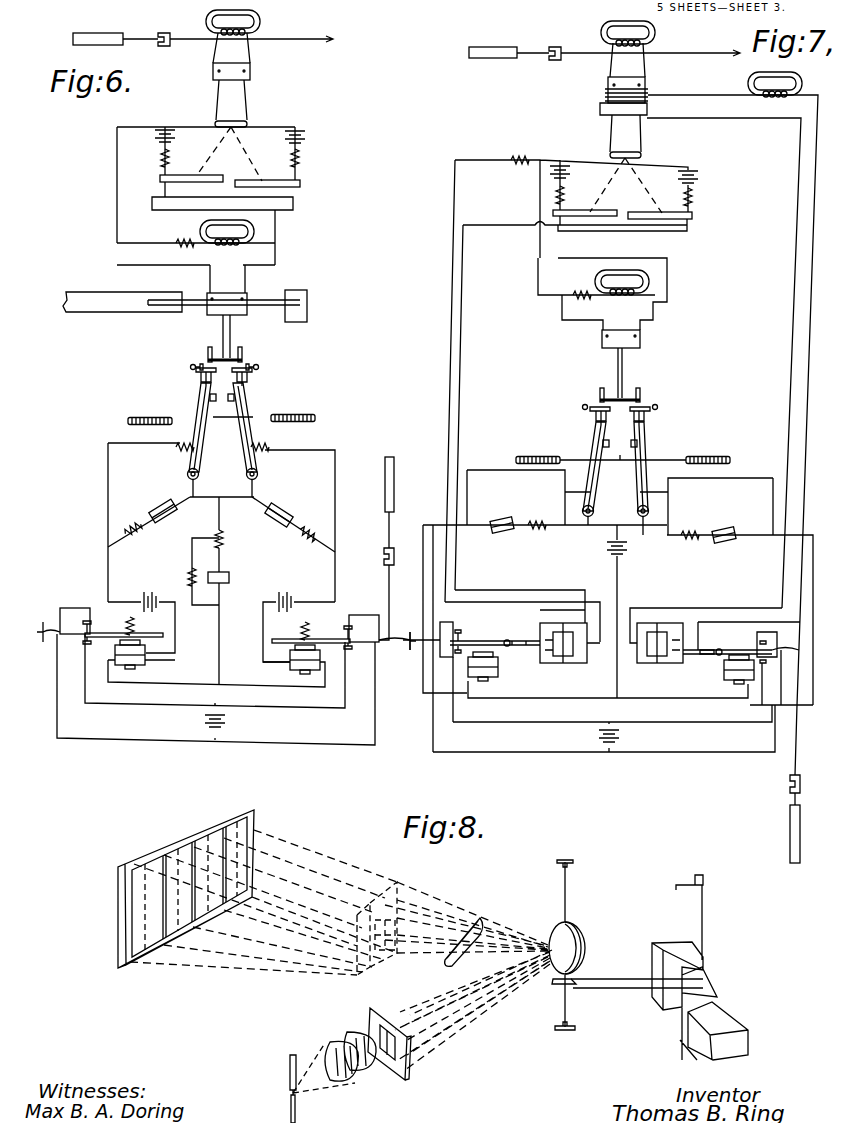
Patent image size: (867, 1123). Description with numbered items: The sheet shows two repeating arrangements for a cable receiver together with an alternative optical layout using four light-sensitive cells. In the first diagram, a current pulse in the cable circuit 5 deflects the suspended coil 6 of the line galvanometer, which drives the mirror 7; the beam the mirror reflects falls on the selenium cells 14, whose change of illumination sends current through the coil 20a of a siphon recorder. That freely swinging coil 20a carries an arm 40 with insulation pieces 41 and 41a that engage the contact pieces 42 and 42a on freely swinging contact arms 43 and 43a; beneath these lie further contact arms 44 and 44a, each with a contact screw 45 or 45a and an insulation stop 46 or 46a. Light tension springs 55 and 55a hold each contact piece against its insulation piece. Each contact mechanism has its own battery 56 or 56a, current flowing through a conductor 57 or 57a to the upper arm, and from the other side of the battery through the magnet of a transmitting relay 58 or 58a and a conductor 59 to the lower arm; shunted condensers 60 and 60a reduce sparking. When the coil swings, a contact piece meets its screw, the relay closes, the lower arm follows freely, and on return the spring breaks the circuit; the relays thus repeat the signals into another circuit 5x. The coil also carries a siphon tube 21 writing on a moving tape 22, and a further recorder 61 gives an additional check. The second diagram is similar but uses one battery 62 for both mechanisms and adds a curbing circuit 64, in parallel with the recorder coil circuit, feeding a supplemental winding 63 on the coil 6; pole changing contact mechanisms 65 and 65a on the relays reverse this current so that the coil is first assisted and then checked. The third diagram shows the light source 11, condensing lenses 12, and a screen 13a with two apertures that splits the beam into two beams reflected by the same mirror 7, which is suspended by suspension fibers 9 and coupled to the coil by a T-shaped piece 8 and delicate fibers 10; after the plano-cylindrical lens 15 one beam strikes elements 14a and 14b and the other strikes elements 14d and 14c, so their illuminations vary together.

In FIG. 6, the cable circuit 5 is at (105, 33).
In FIG. 6, the another circuit 5x is at (394, 457).
In FIG. 7, the another circuit 5x is at (789, 856).
In FIG. 6, the suspended coil 6 is at (250, 72).
In FIG. 7, the suspended coil 6 is at (608, 82).
In FIG. 8, the suspended coil 6 is at (712, 993).
In FIG. 6, the mirror 7 is at (247, 120).
In FIG. 8, the mirror 7 is at (584, 950).
In FIG. 8, the T-shaped piece 8 is at (558, 985).
In FIG. 8, the suspension fibers 9 is at (566, 893).
In FIG. 8, the delicate fibers 10 is at (626, 988).
In FIG. 8, the source of light 11 is at (297, 1098).
In FIG. 8, the condensing lenses 12 is at (376, 1082).
In FIG. 8, the screen 13a is at (408, 1072).
In FIG. 6, the selenium cells 14 is at (160, 178).
In FIG. 7, the selenium cells 14 is at (585, 216).
In FIG. 8, the radio-electro sensitive element 14a is at (135, 867).
In FIG. 8, the radio-electro sensitive element 14b is at (172, 853).
In FIG. 8, the radio-electro sensitive element 14c is at (249, 816).
In FIG. 8, the radio-electro sensitive element 14d is at (210, 833).
In FIG. 8, the plano-cylindrical lens 15 is at (477, 918).
In FIG. 6, the coil of the siphon recorder 20a is at (248, 300).
In FIG. 7, the coil of the siphon recorder 20a is at (641, 340).
In FIG. 6, the siphon tube 21 is at (300, 300).
In FIG. 6, the moving tape 22 is at (100, 312).
In FIG. 6, the arm 40 is at (231, 345).
In FIG. 7, the arm 40 is at (623, 380).
In FIG. 6, the insulation piece 41 is at (210, 355).
In FIG. 6, the insulation piece 41a is at (241, 357).
In FIG. 6, the contact piece 42 is at (200, 367).
In FIG. 6, the contact piece 42a is at (250, 369).
In FIG. 6, the contact arm 43 is at (202, 398).
In FIG. 7, the contact arm 43 is at (598, 432).
In FIG. 6, the contact arm 43a is at (242, 398).
In FIG. 7, the contact arm 43a is at (645, 435).
In FIG. 6, the contact arm 44 is at (212, 409).
In FIG. 7, the contact arm 44 is at (600, 448).
In FIG. 6, the contact arm 44a is at (236, 400).
In FIG. 7, the contact arm 44a is at (640, 453).
In FIG. 6, the contact screw 45 is at (202, 377).
In FIG. 6, the contact screw 45a is at (246, 378).
In FIG. 6, the insulation stop 46 is at (194, 370).
In FIG. 6, the insulation stop 46a is at (254, 365).
In FIG. 6, the tension spring 55 is at (315, 420).
In FIG. 6, the tension spring 55a is at (128, 423).
In FIG. 6, the battery 56 is at (141, 611).
In FIG. 6, the battery 56a is at (299, 615).
In FIG. 6, the conductor 57 is at (108, 524).
In FIG. 6, the conductor 57a is at (335, 528).
In FIG. 6, the transmitting relay 58 is at (145, 662).
In FIG. 7, the transmitting relay 58 is at (488, 678).
In FIG. 6, the transmitting relay 58a is at (290, 670).
In FIG. 7, the transmitting relay 58a is at (724, 668).
In FIG. 6, the conductor 59 is at (219, 640).
In FIG. 6, the shunted condenser 60 is at (110, 516).
In FIG. 6, the shunted condenser 60a is at (283, 506).
In FIG. 6, the further recorder 61 is at (230, 576).
In FIG. 7, the battery 62 is at (630, 550).
In FIG. 7, the supplemental winding 63 is at (650, 99).
In FIG. 7, the circuit 64 is at (798, 190).
In FIG. 7, the pole changing contact mechanism 65 is at (545, 640).
In FIG. 7, the pole changing contact mechanism 65a is at (672, 625).